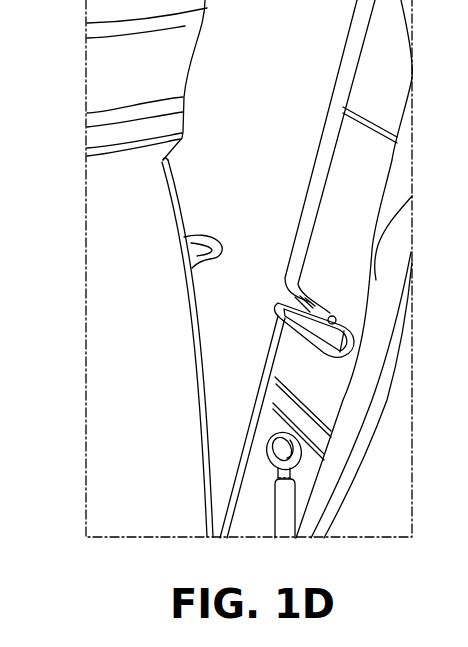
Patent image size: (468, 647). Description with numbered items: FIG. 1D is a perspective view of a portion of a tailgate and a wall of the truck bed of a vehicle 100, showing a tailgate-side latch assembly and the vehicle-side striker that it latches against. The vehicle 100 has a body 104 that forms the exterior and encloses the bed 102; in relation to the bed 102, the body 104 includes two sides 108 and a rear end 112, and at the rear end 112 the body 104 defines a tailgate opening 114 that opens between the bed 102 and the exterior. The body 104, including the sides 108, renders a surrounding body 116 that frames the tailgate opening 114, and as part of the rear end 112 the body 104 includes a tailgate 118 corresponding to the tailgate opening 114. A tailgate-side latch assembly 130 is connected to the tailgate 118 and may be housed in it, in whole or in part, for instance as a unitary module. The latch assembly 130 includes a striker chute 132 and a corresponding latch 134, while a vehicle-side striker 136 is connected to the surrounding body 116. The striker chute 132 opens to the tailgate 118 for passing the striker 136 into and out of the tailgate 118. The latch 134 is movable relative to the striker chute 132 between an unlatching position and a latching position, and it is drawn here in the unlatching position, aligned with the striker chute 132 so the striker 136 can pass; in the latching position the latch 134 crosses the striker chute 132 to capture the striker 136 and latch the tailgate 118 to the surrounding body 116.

The vehicle 100 is at (84, 35).
The body 104 is at (83, 67).
The bed 102 is at (128, 110).
The sides 108 is at (127, 137).
The rear end 112 is at (163, 165).
The tailgate opening 114 is at (192, 208).
The surrounding body 116 is at (180, 231).
The vehicle-side striker 136 is at (185, 240).
The tailgate 118 is at (341, 63).
The tailgate-side latch assembly 130 is at (285, 302).
The striker chute 132 is at (295, 298).
The latch 134 is at (327, 308).